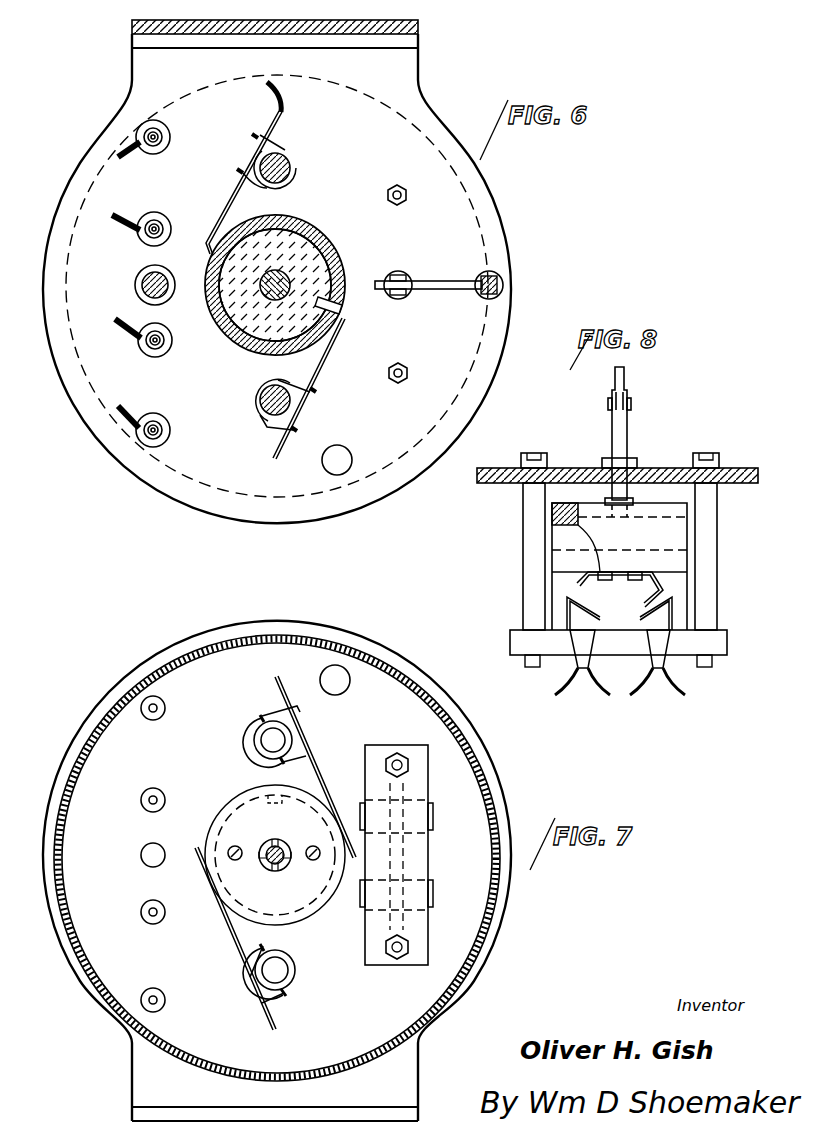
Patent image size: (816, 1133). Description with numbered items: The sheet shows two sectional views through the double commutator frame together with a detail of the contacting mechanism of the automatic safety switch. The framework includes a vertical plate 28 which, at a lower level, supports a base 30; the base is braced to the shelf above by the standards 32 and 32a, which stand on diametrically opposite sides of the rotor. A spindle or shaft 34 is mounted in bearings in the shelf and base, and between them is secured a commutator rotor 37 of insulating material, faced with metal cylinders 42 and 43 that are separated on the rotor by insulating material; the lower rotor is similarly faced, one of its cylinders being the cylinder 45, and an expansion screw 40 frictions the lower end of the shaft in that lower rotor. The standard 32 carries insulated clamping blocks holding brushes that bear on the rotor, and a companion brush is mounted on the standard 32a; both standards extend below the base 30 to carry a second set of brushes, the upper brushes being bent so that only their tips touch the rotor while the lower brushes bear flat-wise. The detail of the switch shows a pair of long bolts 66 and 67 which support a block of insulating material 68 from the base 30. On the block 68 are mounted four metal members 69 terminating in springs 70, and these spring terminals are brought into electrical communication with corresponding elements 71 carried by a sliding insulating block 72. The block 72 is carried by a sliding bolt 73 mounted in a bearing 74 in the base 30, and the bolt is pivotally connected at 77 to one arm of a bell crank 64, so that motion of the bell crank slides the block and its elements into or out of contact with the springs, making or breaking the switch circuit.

In FIG. 6, the vertical plate 28 is at (418, 25).
In FIG. 6, the base 30 is at (73, 400).
In FIG. 8, the base 30 is at (492, 484).
In FIG. 7, the base 30 is at (277, 871).
In FIG. 6, the standard 32 is at (261, 408).
In FIG. 7, the standard 32 is at (258, 742).
In FIG. 6, the standard 32a is at (290, 168).
In FIG. 7, the standard 32a is at (270, 973).
In FIG. 6, the spindle or shaft 34 is at (290, 277).
In FIG. 6, the commutator rotor 37 is at (288, 257).
In FIG. 7, the expansion screw 40 is at (280, 868).
In FIG. 6, the metal cylinder 42 is at (221, 319).
In FIG. 6, the metal cylinder 43 is at (338, 326).
In FIG. 7, the metal cylinder 45 is at (220, 817).
In FIG. 6, the bell crank 64 is at (447, 291).
In FIG. 8, the long bolt 66 is at (533, 559).
In FIG. 7, the long bolt 66 is at (397, 961).
In FIG. 8, the long bolt 67 is at (717, 559).
In FIG. 7, the long bolt 67 is at (400, 757).
In FIG. 8, the block of insulating material 68 is at (515, 641).
In FIG. 7, the block of insulating material 68 is at (372, 946).
In FIG. 8, the metal members 69 is at (655, 641).
In FIG. 7, the metal members 69 is at (433, 828).
In FIG. 8, the springs 70 is at (640, 616).
In FIG. 8, the elements 71 is at (643, 600).
In FIG. 8, the sliding insulating block 72 is at (680, 517).
In FIG. 8, the sliding bolt 73 is at (632, 432).
In FIG. 8, the bearing 74 is at (638, 462).
In FIG. 6, the pivotal connection 77 is at (405, 278).